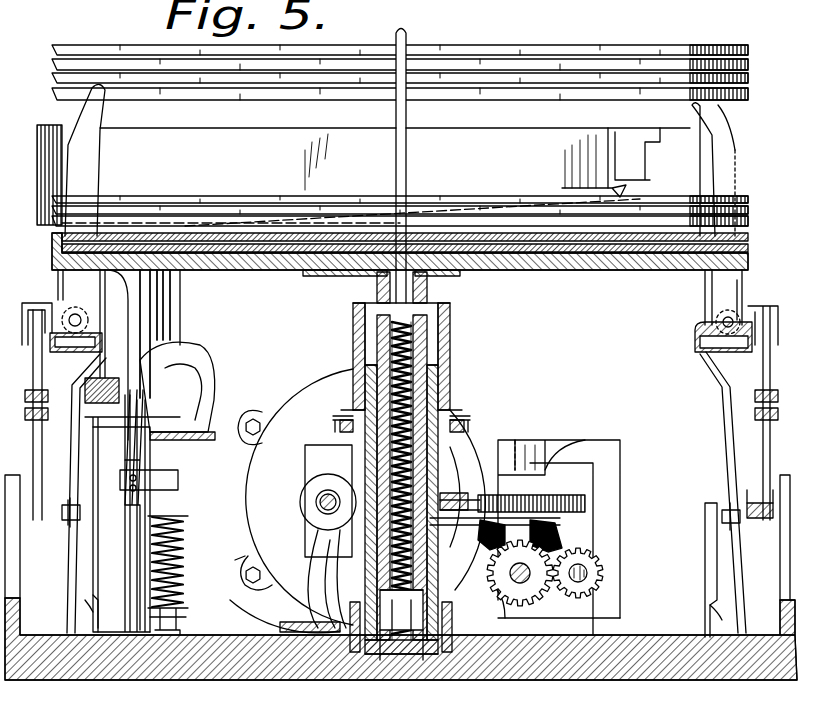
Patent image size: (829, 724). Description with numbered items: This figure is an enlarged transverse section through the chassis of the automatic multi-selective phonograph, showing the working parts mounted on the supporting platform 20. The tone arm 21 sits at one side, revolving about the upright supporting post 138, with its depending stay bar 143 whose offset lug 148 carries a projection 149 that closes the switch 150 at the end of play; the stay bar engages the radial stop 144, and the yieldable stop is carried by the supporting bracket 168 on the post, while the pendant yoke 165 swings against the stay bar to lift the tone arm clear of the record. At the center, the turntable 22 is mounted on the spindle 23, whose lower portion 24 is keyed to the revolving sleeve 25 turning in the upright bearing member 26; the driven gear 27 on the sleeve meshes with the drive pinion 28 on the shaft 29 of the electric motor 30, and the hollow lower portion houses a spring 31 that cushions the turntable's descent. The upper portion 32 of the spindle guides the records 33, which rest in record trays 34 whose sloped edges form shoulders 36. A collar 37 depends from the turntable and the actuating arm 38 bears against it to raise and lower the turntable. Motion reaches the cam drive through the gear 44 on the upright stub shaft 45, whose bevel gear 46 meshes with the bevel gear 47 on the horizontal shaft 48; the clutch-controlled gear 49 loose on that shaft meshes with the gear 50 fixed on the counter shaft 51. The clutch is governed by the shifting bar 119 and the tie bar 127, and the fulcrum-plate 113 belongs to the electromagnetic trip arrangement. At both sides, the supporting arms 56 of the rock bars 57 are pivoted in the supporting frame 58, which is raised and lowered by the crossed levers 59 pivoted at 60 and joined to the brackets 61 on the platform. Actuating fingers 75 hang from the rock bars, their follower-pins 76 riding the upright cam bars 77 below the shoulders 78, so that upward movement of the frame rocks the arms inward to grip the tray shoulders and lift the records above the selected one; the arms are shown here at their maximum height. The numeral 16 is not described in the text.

The bolt 16 is at (72, 525).
The supporting platform 20 is at (197, 676).
The tone arm 21 is at (395, 162).
The turntable 22 is at (630, 272).
The spindle 23 is at (427, 290).
The lower portion of spindle 24 is at (365, 345).
The revolving sleeve 25 is at (460, 412).
The upright bearing member 26 is at (325, 572).
The driven gear 27 is at (470, 490).
The drive pinion 28 is at (316, 510).
The motor shaft 29 is at (322, 498).
The electric motor 30 is at (272, 380).
The spring 31 is at (450, 350).
The upper portion of spindle 32 is at (406, 150).
The records 33 is at (748, 240).
The record trays 34 is at (748, 206).
The shoulders 36 is at (748, 49).
The collar 37 is at (450, 380).
The actuating arm 38 is at (338, 425).
The gear 44 is at (531, 493).
The upright stub shaft 45 is at (518, 438).
The bevel gear 46 is at (545, 538).
The bevel gear 47 is at (555, 600).
The horizontal shaft 48 is at (92, 605).
The clutch-controlled gear 49 is at (530, 600).
The gear 50 is at (600, 566).
The counter shaft 51 is at (587, 575).
The supporting arms 56 is at (100, 170).
The rock bar 57 is at (66, 312).
The supporting frame 58 is at (70, 358).
The crossed levers 59 is at (40, 438).
The pivot 60 is at (30, 402).
The brackets 61 is at (20, 545).
The actuating fingers 75 is at (75, 448).
The follower-pins 76 is at (728, 526).
The cam bars 77 is at (717, 585).
The shoulders 78 is at (730, 612).
The fulcrum-plate 113 is at (370, 678).
The shifting bar 119 is at (585, 440).
The tie bar 127 is at (450, 672).
The supporting post 138 is at (96, 568).
The stay bar 143 is at (172, 318).
The radial stop 144 is at (104, 390).
The offset lug 148 is at (185, 358).
The projection 149 is at (165, 448).
The switch 150 is at (158, 458).
The pendant yoke 165 is at (140, 292).
The supporting bracket 168 is at (132, 513).